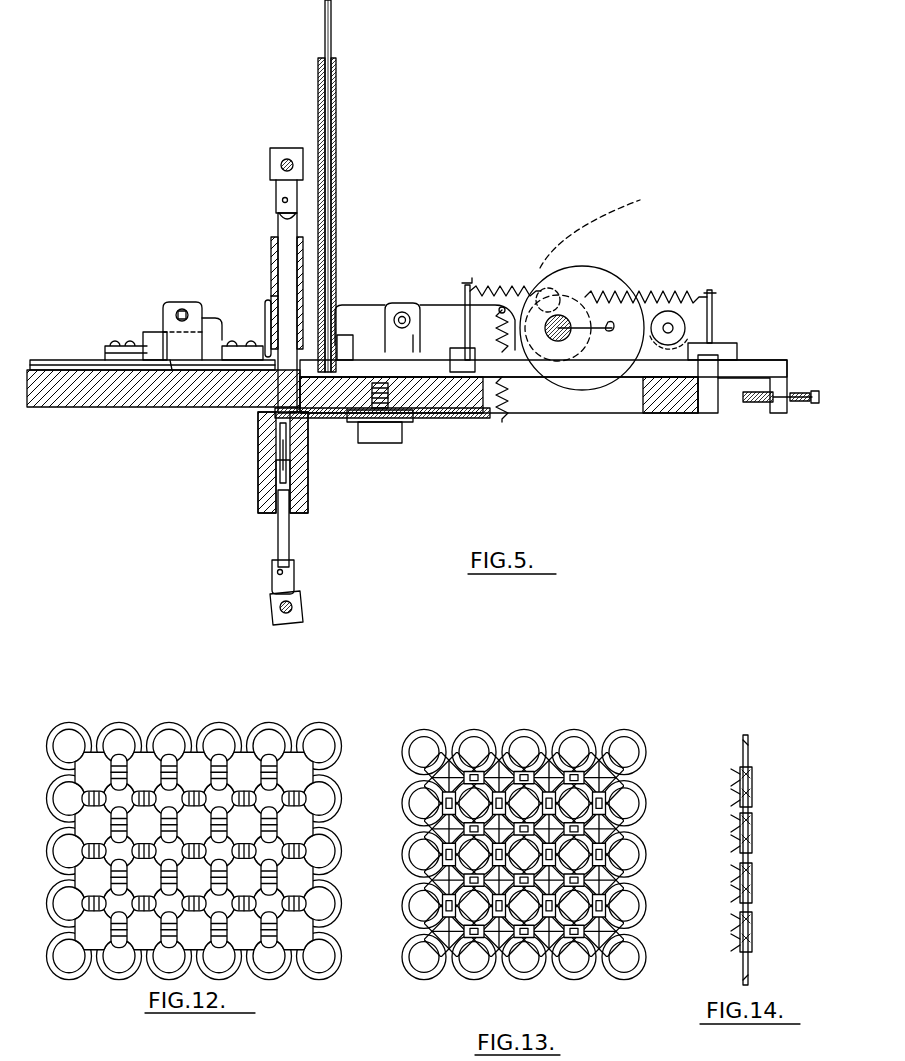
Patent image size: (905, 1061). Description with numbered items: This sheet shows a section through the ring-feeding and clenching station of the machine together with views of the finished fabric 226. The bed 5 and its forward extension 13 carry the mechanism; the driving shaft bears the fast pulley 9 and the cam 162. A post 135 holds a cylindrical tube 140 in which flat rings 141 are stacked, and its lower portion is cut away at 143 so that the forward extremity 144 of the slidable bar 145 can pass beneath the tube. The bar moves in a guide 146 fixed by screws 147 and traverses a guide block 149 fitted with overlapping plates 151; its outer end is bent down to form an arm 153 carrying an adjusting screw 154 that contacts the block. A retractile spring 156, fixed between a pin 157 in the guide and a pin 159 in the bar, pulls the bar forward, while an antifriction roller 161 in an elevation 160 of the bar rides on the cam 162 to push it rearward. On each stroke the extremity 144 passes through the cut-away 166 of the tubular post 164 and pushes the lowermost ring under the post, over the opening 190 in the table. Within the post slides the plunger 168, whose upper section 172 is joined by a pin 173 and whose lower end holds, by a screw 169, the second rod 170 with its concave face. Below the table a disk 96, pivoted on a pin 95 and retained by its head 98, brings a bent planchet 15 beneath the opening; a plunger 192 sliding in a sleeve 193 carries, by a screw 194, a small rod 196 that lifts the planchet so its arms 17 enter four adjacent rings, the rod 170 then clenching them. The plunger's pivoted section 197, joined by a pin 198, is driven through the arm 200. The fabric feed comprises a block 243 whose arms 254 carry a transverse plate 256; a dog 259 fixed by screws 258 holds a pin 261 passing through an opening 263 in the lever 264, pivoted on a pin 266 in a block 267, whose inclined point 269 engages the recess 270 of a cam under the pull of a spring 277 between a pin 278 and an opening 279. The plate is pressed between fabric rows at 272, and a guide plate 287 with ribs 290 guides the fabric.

In FIG. 5, the bed 5 is at (681, 405).
In FIG. 13, the fast pulley 9 is at (548, 713).
In FIG. 5, the forward extension 13 is at (88, 395).
In FIG. 12, the planchet 15 is at (295, 878).
In FIG. 14, the planchet 15 is at (751, 834).
In FIG. 13, the radial arm 17 is at (442, 768).
In FIG. 5, the pin 95 is at (385, 406).
In FIG. 5, the disk 96 is at (452, 420).
In FIG. 5, the head 98 is at (375, 440).
In FIG. 5, the post 135 is at (339, 121).
In FIG. 5, the cylindrical tube 140 is at (334, 35).
In FIG. 12, the flat ring 141 is at (228, 735).
In FIG. 13, the flat ring 141 is at (426, 733).
In FIG. 5, the cut-away portion 143 is at (346, 336).
In FIG. 5, the forward extremity 144 is at (315, 420).
In FIG. 5, the slidable bar 145 is at (522, 380).
In FIG. 5, the guide 146 is at (450, 355).
In FIG. 5, the screw 147 is at (514, 389).
In FIG. 5, the guide block 149 is at (712, 401).
In FIG. 5, the overlapping plate 151 is at (710, 360).
In FIG. 5, the arm 153 is at (778, 413).
In FIG. 5, the adjusting screw 154 is at (816, 390).
In FIG. 5, the retractile spring 156 is at (490, 291).
In FIG. 5, the pin 157 is at (468, 283).
In FIG. 5, the pin 159 is at (713, 292).
In FIG. 5, the elevation 160 is at (697, 348).
In FIG. 5, the antifriction roller 161 is at (686, 298).
In FIG. 5, the cam 162 is at (590, 270).
In FIG. 5, the tubular post 164 is at (271, 253).
In FIG. 5, the cut-away portion 166 is at (265, 388).
In FIG. 5, the plunger 168 is at (278, 223).
In FIG. 5, the screw 169 is at (273, 296).
In FIG. 5, the second rod 170 is at (265, 314).
In FIG. 5, the upper section 172 is at (273, 168).
In FIG. 5, the pin 173 is at (283, 199).
In FIG. 5, the opening 190 is at (270, 378).
In FIG. 5, the plunger 192 is at (291, 538).
In FIG. 5, the sleeve 193 is at (305, 492).
In FIG. 5, the screw 194 is at (280, 477).
In FIG. 5, the small rod 196 is at (281, 441).
In FIG. 5, the pivoted section 197 is at (295, 582).
In FIG. 5, the pin 198 is at (277, 573).
In FIG. 5, the arm 200 is at (272, 618).
In FIG. 12, the fabric 226 is at (146, 730).
In FIG. 13, the fabric 226 is at (614, 735).
In FIG. 5, the block 243 is at (148, 341).
In FIG. 5, the horizontally extending arm 254 is at (244, 342).
In FIG. 5, the transverse plate 256 is at (47, 360).
In FIG. 5, the screw 258 is at (173, 360).
In FIG. 5, the dog 259 is at (186, 303).
In FIG. 5, the pin 261 is at (176, 316).
In FIG. 5, the opening 263 is at (172, 302).
In FIG. 5, the lever 264 is at (340, 305).
In FIG. 5, the pin 266 is at (403, 312).
In FIG. 5, the block 267 is at (416, 334).
In FIG. 5, the inclined point 269 is at (562, 275).
In FIG. 5, the peripheral recess 270 is at (582, 268).
In FIG. 14, the gripping location 272 is at (737, 812).
In FIG. 5, the spring 277 is at (510, 392).
In FIG. 5, the pin 278 is at (497, 428).
In FIG. 5, the opening 279 is at (488, 329).
In FIG. 5, the guide plate 287 is at (303, 300).
In FIG. 5, the rib 290 is at (277, 374).